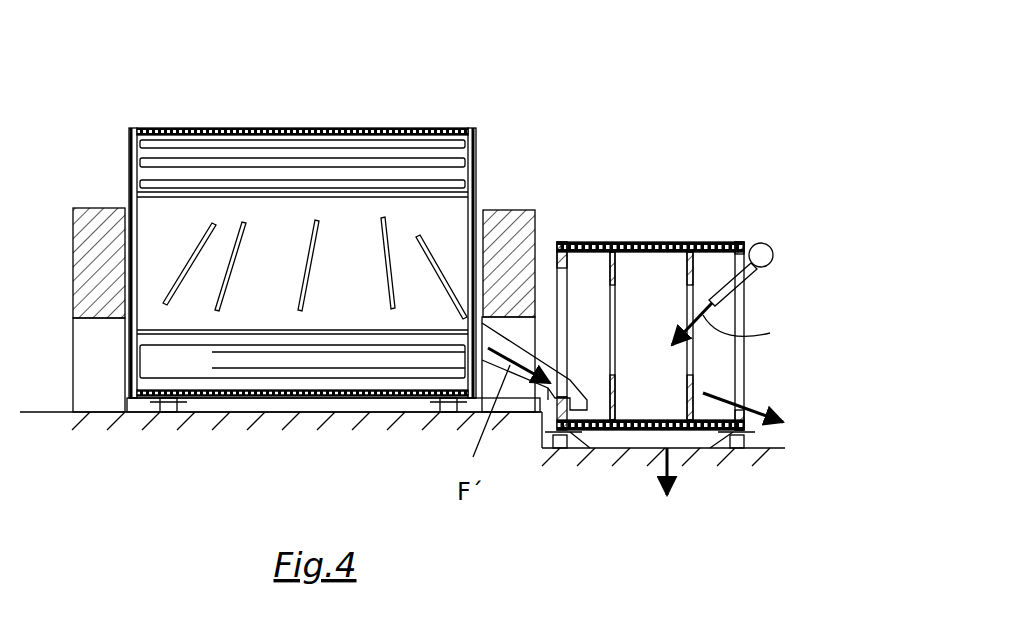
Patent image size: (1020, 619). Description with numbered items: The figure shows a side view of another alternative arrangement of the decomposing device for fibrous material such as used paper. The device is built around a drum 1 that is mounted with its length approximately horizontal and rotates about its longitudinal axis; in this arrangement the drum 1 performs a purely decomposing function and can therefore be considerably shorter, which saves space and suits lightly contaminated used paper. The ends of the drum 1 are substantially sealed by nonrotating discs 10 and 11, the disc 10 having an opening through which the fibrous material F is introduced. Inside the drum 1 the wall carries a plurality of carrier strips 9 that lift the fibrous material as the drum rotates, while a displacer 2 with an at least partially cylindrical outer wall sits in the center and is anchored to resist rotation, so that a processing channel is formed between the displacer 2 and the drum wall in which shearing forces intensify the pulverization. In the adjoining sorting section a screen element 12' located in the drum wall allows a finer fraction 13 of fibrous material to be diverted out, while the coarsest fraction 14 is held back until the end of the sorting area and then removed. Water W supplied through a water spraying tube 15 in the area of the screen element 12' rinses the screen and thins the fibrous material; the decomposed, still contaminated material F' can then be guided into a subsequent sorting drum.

The drum 1 is at (282, 128).
The displacer 2 is at (483, 197).
The carrier strips 9 is at (308, 373).
The nonrotating disc 10 is at (130, 135).
The nonrotating disc 11 is at (481, 133).
The screen element 12' is at (650, 296).
The finer fraction 13 is at (673, 488).
The coarsest fraction 14 is at (783, 418).
The water spraying tube 15 is at (760, 243).